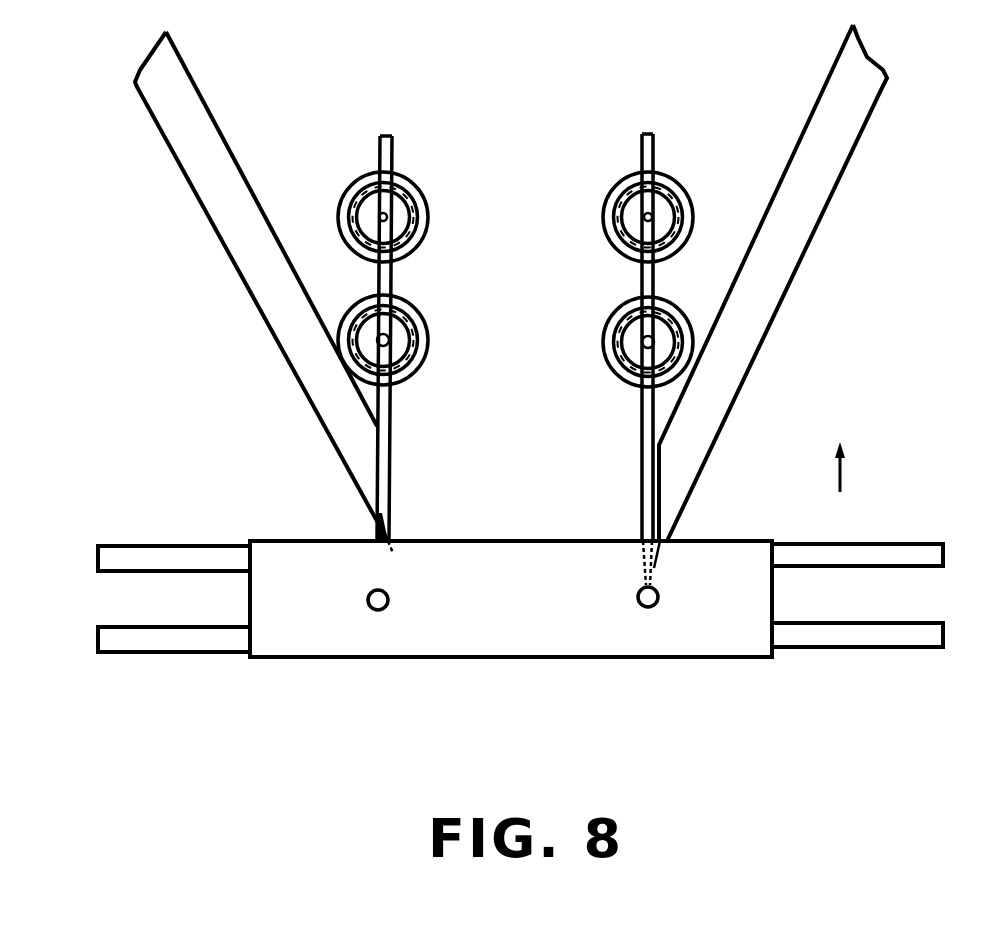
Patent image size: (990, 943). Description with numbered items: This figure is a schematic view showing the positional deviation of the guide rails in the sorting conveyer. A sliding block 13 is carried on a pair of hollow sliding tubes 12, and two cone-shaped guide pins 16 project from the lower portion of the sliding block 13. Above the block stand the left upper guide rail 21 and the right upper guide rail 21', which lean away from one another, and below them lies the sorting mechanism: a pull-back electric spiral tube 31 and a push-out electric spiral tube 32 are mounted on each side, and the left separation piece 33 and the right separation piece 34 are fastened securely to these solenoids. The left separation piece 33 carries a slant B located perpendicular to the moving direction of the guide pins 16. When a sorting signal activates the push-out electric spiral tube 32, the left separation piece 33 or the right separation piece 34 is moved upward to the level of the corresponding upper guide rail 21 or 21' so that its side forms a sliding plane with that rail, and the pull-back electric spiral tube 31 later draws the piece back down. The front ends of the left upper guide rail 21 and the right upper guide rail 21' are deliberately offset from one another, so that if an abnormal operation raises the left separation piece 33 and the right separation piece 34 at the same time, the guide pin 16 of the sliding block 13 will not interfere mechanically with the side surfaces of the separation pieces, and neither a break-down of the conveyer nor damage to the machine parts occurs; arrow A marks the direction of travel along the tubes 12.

The sliding tube 12 is at (115, 558).
The sliding block 13 is at (737, 637).
The cone-shaped guide pin 16 is at (376, 610).
The left upper guide rail 21 is at (238, 286).
The right upper guide rail 21' is at (818, 283).
The pull-back electric spiral tube 31 is at (402, 332).
The push-out electric spiral tube 32 is at (395, 210).
The left separation piece 33 is at (392, 510).
The right separation piece 34 is at (642, 505).
The direction arrow A is at (851, 469).
The slant B is at (397, 537).